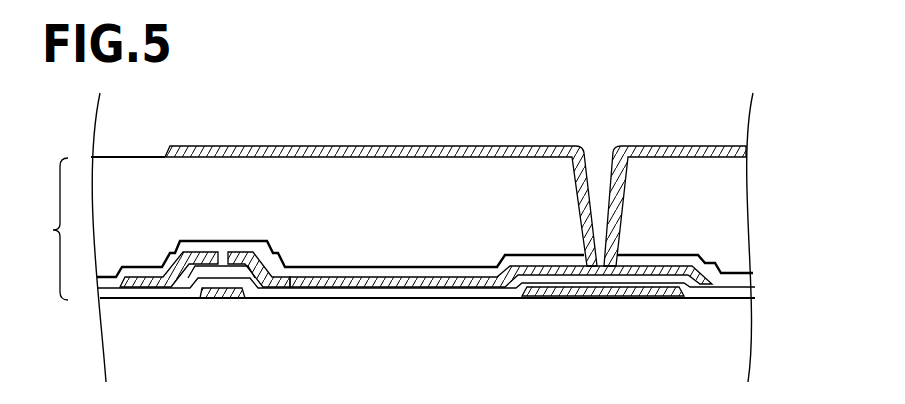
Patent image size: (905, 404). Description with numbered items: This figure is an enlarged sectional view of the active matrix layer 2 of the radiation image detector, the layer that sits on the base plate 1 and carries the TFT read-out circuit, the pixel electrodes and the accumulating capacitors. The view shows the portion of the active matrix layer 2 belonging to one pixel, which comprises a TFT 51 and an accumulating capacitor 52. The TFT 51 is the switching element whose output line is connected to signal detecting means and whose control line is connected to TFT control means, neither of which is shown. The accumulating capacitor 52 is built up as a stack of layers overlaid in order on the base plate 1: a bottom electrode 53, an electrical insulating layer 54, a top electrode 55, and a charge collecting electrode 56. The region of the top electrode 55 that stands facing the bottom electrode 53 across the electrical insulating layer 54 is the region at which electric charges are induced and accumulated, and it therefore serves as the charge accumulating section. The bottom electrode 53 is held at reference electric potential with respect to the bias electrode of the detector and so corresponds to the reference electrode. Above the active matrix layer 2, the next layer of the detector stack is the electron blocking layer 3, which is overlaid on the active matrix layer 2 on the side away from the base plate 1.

The base plate 1 is at (740, 326).
The active matrix layer 2 is at (51, 229).
The electron blocking layer 3 is at (740, 119).
The TFT 51 is at (243, 233).
The accumulating capacitor 52 is at (557, 235).
The bottom electrode 53 is at (621, 289).
The electrical insulating layer 54 is at (687, 287).
The top electrode 55 is at (656, 266).
The charge collecting electrode 56 is at (294, 146).